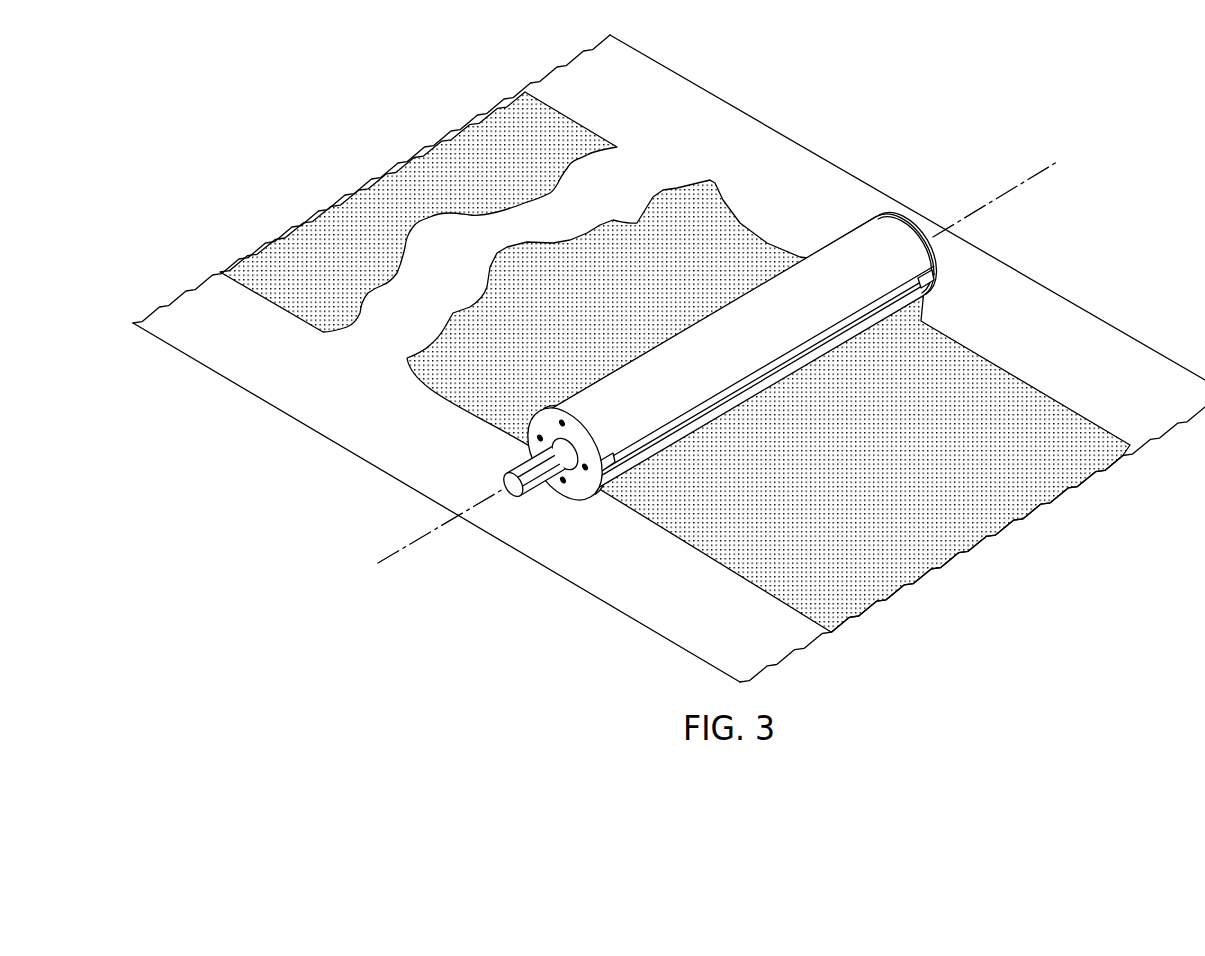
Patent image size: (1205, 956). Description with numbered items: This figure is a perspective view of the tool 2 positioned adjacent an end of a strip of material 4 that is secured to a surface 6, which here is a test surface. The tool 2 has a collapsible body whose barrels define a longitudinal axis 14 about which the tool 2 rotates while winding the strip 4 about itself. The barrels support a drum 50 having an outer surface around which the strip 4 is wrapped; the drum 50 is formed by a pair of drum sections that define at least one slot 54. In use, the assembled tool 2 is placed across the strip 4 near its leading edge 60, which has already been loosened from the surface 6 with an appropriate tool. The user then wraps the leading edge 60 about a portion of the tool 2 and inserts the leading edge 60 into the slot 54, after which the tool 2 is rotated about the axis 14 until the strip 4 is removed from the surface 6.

The tool 2 is at (736, 309).
The strip of material 4 is at (1012, 390).
The surface 6 is at (1025, 282).
The longitudinal axis 14 is at (1040, 174).
The drum 50 is at (614, 385).
The slot 54 is at (672, 428).
The leading edge 60 is at (500, 252).